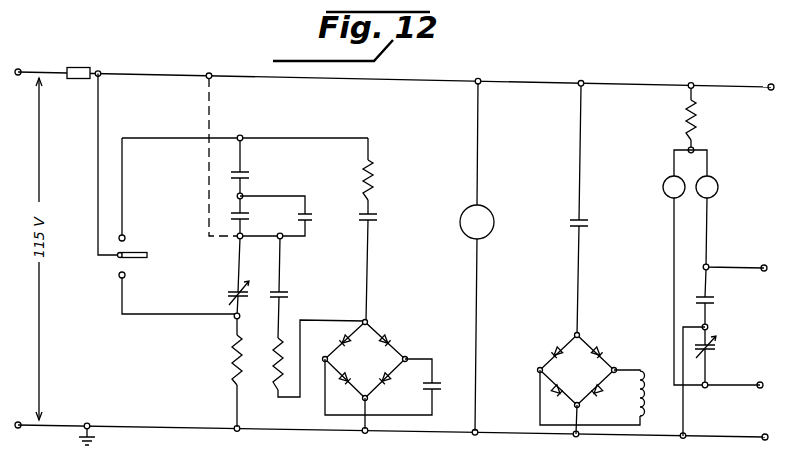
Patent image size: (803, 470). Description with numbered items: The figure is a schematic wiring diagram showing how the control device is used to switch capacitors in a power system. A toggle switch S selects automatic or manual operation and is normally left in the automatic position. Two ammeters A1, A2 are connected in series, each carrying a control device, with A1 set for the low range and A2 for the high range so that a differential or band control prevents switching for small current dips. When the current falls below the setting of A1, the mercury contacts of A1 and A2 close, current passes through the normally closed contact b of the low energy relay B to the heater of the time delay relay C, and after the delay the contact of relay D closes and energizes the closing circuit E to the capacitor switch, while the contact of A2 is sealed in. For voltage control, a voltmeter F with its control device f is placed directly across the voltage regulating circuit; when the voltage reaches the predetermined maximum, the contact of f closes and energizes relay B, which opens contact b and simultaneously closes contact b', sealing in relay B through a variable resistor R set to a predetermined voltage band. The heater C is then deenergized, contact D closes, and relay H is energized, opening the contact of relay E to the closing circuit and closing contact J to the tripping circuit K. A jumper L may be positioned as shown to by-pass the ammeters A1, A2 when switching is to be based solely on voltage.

The toggle switch S is at (163, 194).
The jumper L is at (207, 117).
The ammeter A1 is at (250, 176).
The ammeter A2 is at (250, 217).
The normally closed contact of relay B b is at (225, 278).
The contact of relay B b' is at (292, 288).
The time delay relay heater C is at (228, 372).
The variable resistor R is at (308, 358).
The control device f is at (378, 222).
The voltmeter F is at (461, 235).
The low energy relay B is at (391, 387).
The relay contact D is at (587, 224).
The relay H is at (645, 414).
The closing circuit contact E is at (715, 301).
The tripping circuit contact J is at (717, 352).
The tripping circuit K is at (769, 388).